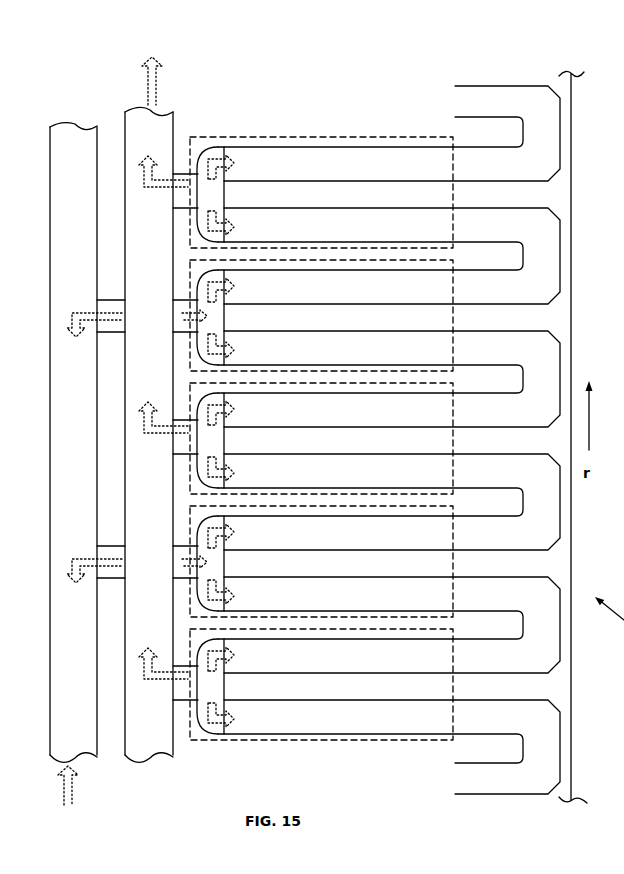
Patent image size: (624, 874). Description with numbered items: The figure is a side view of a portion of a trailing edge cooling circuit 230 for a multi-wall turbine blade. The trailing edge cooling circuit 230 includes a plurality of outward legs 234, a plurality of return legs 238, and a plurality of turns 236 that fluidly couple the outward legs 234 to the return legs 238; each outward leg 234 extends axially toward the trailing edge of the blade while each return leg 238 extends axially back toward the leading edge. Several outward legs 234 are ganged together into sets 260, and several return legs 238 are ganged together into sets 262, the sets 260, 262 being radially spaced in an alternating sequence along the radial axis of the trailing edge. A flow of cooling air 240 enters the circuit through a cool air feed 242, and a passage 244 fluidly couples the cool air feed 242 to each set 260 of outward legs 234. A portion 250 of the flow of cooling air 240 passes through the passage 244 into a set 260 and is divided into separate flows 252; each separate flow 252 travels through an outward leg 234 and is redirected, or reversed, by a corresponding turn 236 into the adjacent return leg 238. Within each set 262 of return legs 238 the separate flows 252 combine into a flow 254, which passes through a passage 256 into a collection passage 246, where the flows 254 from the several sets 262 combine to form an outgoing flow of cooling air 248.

The trailing edge cooling circuit 230 is at (380, 80).
The outward leg 234 is at (352, 306).
The turn 236 is at (497, 69).
The return leg 238 is at (352, 183).
The flow of cooling air 240 is at (72, 793).
The cool air feed 242 is at (53, 653).
The passage 244 is at (112, 333).
The collection passage 246 is at (163, 755).
The flow of cooling air 248 is at (158, 62).
The portion of the flow of cooling air 250 is at (80, 312).
The separate flow 252 is at (229, 157).
The flow 254 is at (160, 197).
The passage 256 is at (178, 209).
The set of outward legs 260 is at (180, 273).
The set of return legs 262 is at (180, 150).